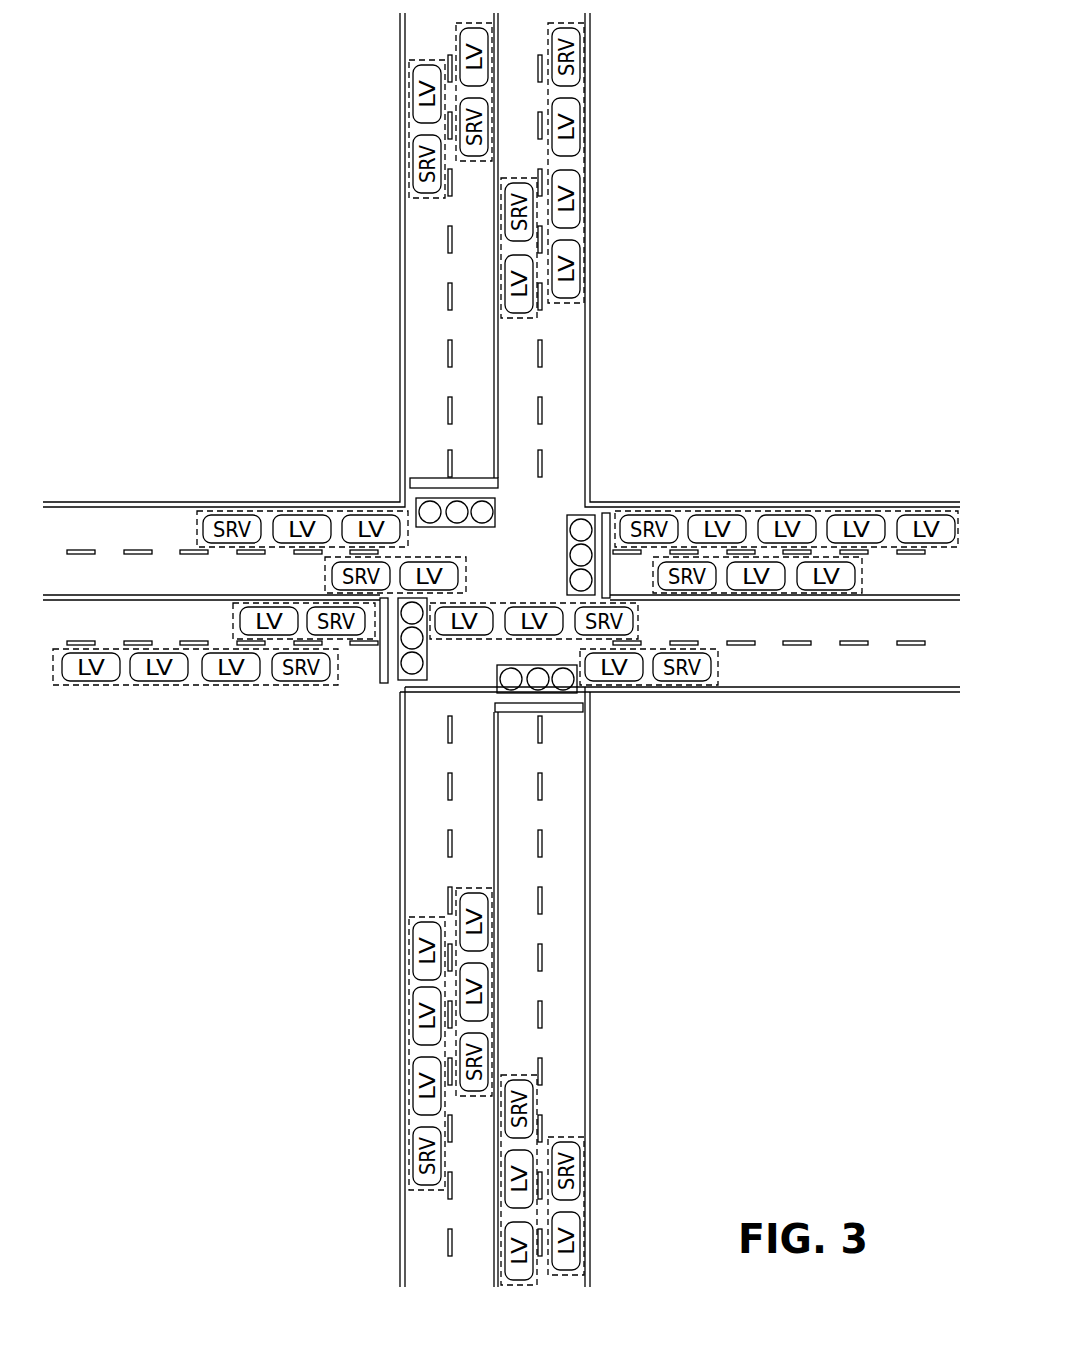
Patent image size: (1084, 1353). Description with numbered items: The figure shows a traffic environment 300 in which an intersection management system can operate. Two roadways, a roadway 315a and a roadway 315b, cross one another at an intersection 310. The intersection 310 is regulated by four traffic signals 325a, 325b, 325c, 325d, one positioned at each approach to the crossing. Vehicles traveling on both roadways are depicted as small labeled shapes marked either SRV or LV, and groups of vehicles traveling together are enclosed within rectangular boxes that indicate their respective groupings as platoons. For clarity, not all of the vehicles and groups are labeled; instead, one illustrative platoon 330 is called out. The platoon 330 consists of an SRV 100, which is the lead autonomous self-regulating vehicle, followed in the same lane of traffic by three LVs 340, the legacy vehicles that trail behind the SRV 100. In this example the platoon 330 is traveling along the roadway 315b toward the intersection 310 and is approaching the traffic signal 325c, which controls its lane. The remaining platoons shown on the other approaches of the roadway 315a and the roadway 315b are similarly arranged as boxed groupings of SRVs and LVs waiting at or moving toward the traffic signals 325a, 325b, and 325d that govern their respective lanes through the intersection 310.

The traffic environment 300 is at (765, 236).
The intersection 310 is at (518, 573).
The roadway 315a is at (591, 887).
The roadway 315b is at (815, 692).
The traffic signal 325a is at (583, 515).
The traffic signal 325b is at (555, 695).
The traffic signal 325c is at (412, 680).
The traffic signal 325d is at (430, 498).
The platoon 330 is at (130, 685).
The LV 340 is at (208, 681).
The SRV 100 is at (280, 681).